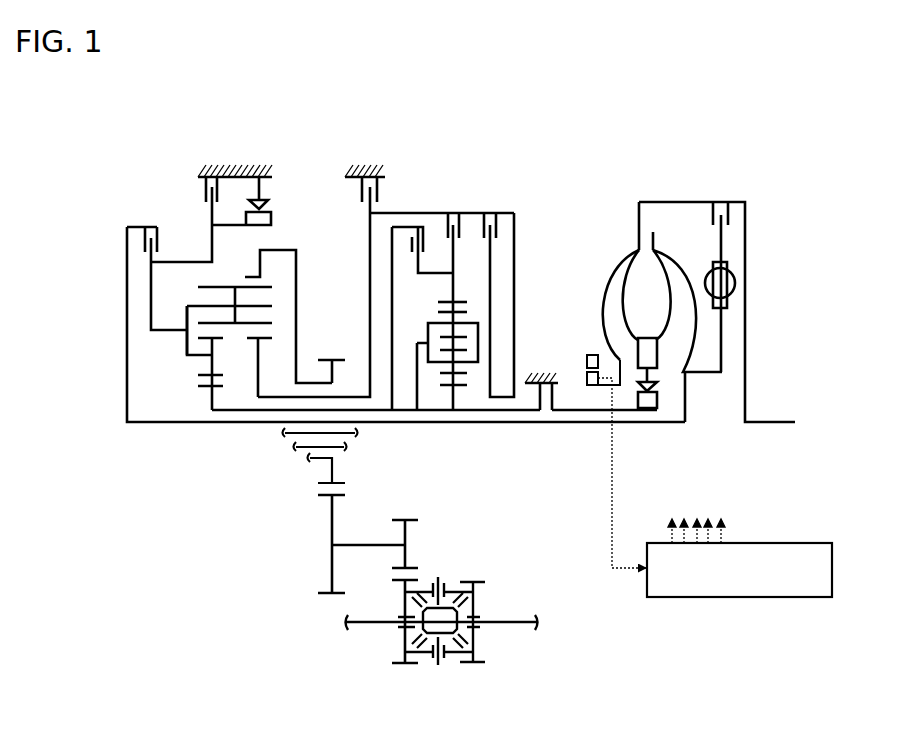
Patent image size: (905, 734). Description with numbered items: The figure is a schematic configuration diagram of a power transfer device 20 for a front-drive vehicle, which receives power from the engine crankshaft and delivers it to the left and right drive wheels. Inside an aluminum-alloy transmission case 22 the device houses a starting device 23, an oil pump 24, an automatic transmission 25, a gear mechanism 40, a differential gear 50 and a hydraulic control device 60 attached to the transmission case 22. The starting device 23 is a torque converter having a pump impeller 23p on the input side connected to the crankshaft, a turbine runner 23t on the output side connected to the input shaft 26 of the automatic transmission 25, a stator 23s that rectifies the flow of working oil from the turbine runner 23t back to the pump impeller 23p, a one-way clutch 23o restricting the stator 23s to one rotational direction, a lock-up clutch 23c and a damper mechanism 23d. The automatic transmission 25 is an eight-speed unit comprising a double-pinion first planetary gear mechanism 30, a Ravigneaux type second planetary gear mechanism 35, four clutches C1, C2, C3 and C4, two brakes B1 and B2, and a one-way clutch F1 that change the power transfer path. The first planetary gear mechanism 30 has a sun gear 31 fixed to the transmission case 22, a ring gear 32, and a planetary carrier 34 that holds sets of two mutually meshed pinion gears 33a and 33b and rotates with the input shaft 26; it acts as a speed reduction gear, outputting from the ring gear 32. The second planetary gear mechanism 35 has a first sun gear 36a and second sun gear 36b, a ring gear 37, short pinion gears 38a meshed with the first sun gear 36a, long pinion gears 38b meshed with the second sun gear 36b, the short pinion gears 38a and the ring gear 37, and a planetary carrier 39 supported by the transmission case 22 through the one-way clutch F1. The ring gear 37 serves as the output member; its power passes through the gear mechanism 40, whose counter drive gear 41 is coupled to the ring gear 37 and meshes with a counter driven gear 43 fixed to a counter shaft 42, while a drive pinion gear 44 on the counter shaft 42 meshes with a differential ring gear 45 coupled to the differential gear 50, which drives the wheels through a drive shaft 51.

The power transfer device 20 is at (497, 128).
The transmission case 22 is at (224, 164).
The brake B2 is at (205, 193).
The clutch C2 is at (142, 238).
The one-way clutch F1 is at (272, 218).
The automatic transmission 25 is at (336, 191).
The brake B1 is at (377, 192).
The ring gear 37 is at (267, 275).
The long pinion gears 38b is at (205, 287).
The planetary carrier 39 is at (187, 318).
The short pinion gears 38a is at (210, 364).
The second planetary gear mechanism 35 is at (182, 383).
The first sun gear 36a is at (202, 387).
The second sun gear 36b is at (247, 338).
The clutch C1 is at (424, 240).
The clutch C3 is at (462, 232).
The clutch C4 is at (498, 230).
The first planetary gear mechanism 30 is at (432, 307).
The planetary carrier 34 is at (426, 334).
The ring gear 32 is at (462, 302).
The pinion gear 33b is at (467, 312).
The pinion gear 33a is at (462, 350).
The sun gear 31 is at (448, 387).
The oil pump 24 is at (578, 378).
The starting device 23 is at (627, 223).
The pump impeller 23p is at (608, 260).
The turbine runner 23t is at (673, 253).
The stator 23s is at (645, 337).
The one-way clutch 23o is at (666, 398).
The input shaft 26 is at (657, 425).
The lock-up clutch 23c is at (736, 217).
The damper mechanism 23d is at (736, 298).
The counter drive gear 41 is at (318, 483).
The gear mechanism 40 is at (317, 512).
The counter driven gear 43 is at (330, 565).
The counter shaft 42 is at (358, 545).
The drive pinion gear 44 is at (415, 520).
The differential ring gear 45 is at (398, 663).
The differential gear 50 is at (498, 601).
The drive shaft 51 is at (515, 623).
The hydraulic control device 60 is at (692, 597).